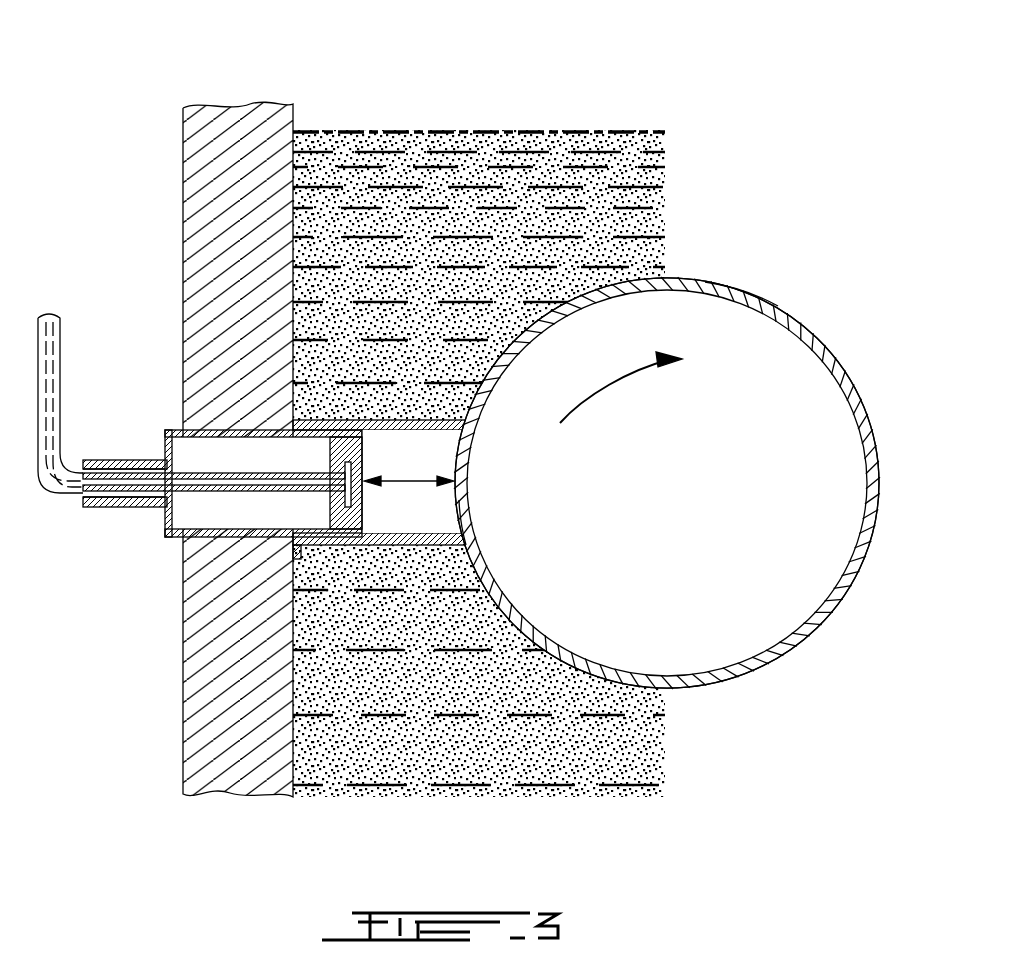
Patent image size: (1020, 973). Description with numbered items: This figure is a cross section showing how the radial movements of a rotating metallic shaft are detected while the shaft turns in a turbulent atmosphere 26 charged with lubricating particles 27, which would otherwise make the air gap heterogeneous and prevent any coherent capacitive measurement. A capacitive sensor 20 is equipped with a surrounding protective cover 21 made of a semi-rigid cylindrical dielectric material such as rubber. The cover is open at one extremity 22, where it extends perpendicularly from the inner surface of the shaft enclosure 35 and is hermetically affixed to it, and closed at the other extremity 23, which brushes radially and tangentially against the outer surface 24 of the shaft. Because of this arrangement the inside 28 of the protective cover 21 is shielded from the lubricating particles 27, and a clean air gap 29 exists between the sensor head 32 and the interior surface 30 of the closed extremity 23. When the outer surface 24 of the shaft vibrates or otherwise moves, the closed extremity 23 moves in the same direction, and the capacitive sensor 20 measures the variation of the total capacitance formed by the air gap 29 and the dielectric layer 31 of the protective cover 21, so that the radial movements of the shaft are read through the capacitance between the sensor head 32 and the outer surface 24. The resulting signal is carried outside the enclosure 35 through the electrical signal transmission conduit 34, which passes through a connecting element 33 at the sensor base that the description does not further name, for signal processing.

The capacitive sensor 20 is at (313, 452).
The protective cover 21 is at (380, 417).
The open extremity 22 is at (185, 627).
The closed extremity 23 is at (470, 480).
The outer surface 24 is at (654, 465).
The turbulent atmosphere 26 is at (317, 267).
The lubricating particles 27 is at (455, 673).
The inside of protective cover 28 is at (428, 507).
The clean air gap 29 is at (452, 470).
The interior surface 30 is at (463, 455).
The dielectric layer 31 is at (464, 520).
The sensor head 32 is at (293, 548).
The fitting 33 is at (185, 538).
The electrical signal transmission conduit 34 is at (50, 385).
The shaft enclosure 35 is at (228, 150).